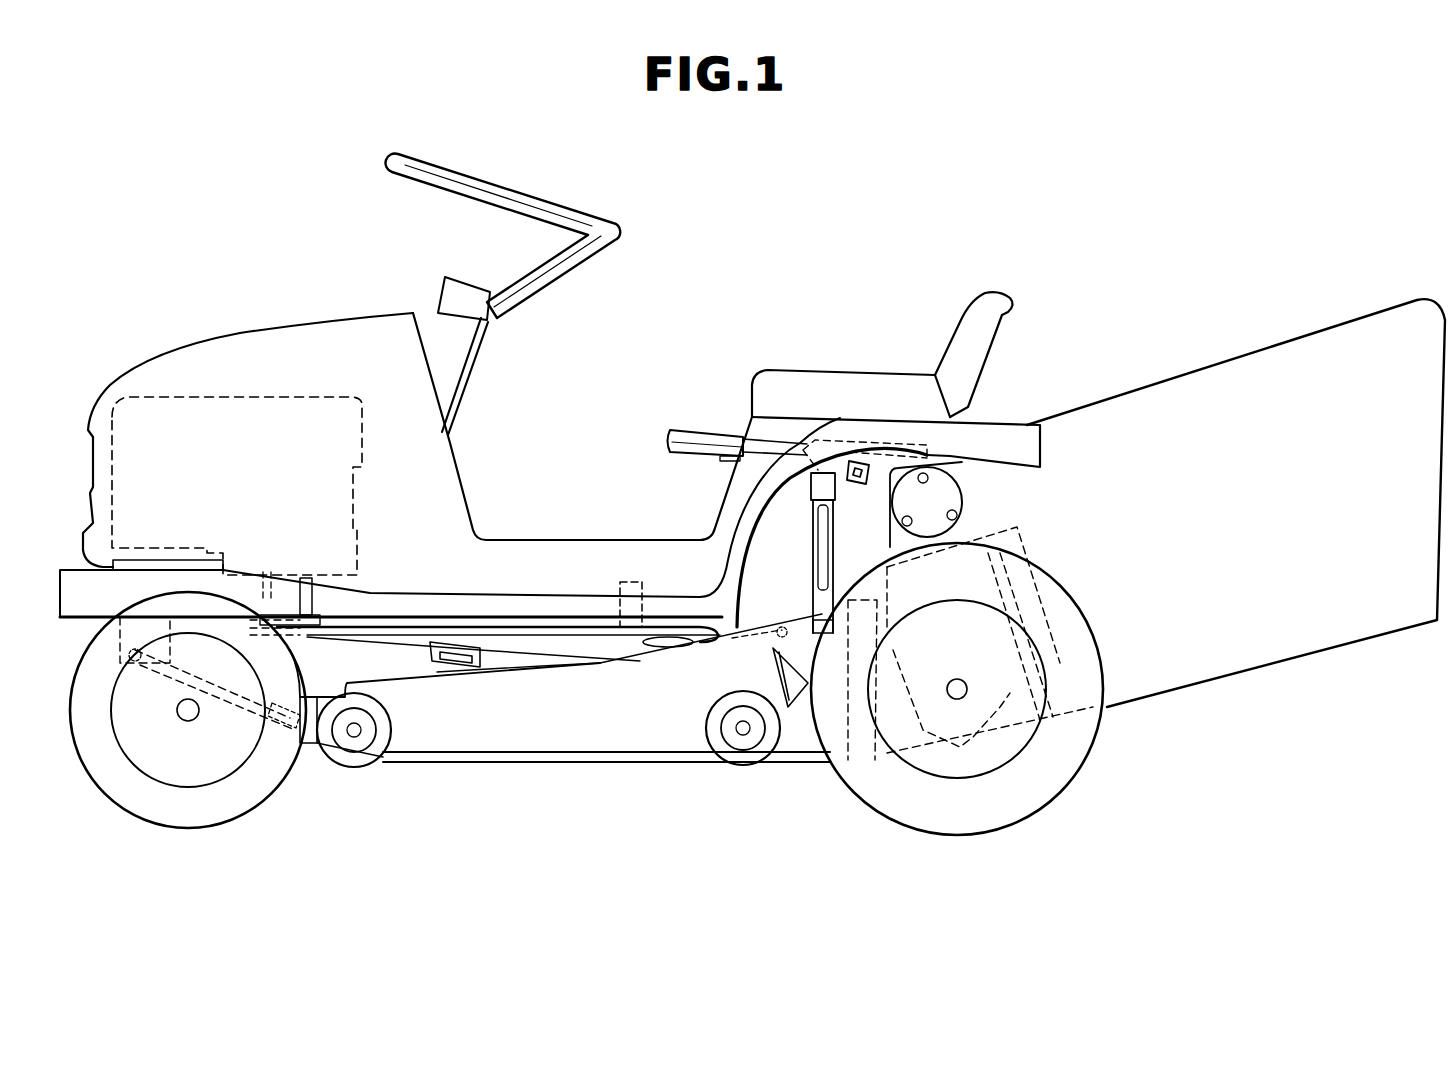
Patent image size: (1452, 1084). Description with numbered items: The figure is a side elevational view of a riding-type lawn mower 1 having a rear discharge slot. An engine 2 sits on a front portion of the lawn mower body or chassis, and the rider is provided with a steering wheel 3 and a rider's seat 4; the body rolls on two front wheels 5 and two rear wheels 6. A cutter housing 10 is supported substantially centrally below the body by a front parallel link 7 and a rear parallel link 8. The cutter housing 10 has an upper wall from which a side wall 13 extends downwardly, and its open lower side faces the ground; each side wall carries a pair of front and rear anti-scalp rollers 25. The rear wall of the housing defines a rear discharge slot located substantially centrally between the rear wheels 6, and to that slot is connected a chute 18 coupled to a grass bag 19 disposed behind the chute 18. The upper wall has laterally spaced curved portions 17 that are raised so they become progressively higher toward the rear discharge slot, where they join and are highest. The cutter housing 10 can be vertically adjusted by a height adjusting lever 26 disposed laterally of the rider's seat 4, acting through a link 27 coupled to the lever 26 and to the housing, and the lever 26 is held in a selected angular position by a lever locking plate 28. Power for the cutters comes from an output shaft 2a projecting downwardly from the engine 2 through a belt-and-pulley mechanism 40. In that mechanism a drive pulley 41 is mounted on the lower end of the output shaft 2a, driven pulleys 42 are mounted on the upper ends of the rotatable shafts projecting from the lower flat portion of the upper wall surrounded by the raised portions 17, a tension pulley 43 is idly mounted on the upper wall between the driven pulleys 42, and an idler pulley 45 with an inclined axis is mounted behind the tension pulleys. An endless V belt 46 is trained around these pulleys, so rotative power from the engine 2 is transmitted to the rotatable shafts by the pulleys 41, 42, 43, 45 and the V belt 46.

The riding-type lawn mower 1 is at (150, 315).
The engine 2 is at (357, 498).
The output shaft 2a is at (263, 575).
The steering wheel 3 is at (542, 200).
The rider's seat 4 is at (872, 368).
The front wheels 5 is at (128, 802).
The rear wheels 6 is at (1040, 800).
The front parallel link 7 is at (226, 696).
The rear parallel link 8 is at (737, 627).
The cutter housing 10 is at (458, 772).
The side wall 13 is at (590, 763).
The curved portions 17 is at (602, 664).
The chute 18 is at (990, 512).
The grass bag 19 is at (1290, 347).
The anti-scalp rollers 25 is at (352, 768).
The height adjusting lever 26 is at (690, 433).
The link 27 is at (833, 537).
The lever locking plate 28 is at (868, 487).
The belt-and-pulley mechanism 40 is at (565, 614).
The drive pulley 41 is at (307, 577).
The driven pulleys 42 is at (530, 665).
The tension pulley 43 is at (427, 668).
The idler pulley 45 is at (683, 645).
The endless V belt 46 is at (460, 630).